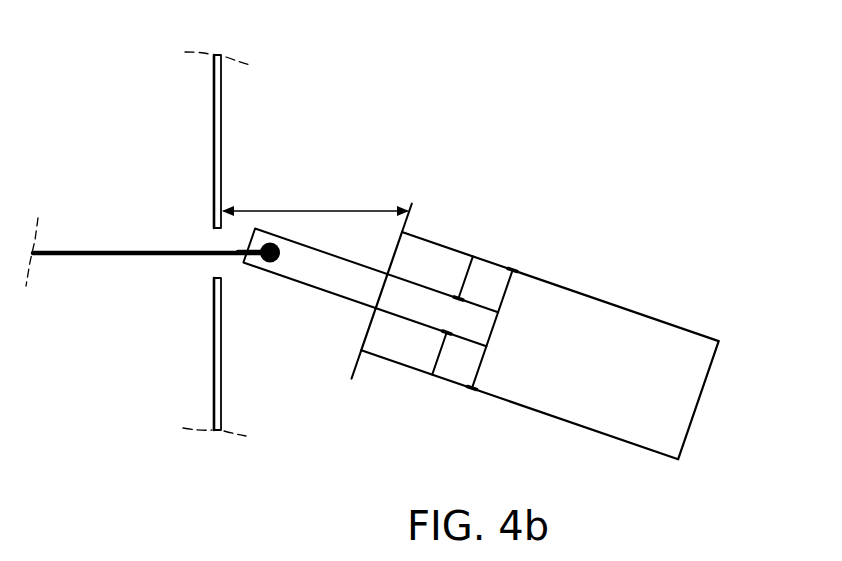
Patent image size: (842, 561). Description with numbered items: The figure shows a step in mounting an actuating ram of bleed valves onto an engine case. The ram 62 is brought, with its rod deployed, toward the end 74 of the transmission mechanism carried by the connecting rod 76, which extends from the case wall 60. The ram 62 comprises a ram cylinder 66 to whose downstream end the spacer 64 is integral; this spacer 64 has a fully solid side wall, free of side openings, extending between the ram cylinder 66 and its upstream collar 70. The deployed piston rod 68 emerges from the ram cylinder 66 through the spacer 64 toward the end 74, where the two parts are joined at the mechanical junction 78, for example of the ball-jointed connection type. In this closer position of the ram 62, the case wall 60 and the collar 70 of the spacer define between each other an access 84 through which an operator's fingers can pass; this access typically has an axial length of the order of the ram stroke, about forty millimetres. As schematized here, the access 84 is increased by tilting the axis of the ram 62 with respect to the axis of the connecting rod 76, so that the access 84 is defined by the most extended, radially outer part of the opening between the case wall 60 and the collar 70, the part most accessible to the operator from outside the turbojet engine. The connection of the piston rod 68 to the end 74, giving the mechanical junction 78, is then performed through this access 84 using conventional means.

The case wall 60 is at (222, 80).
The ram 62 is at (690, 320).
The spacer 64 is at (448, 246).
The ram cylinder 66 is at (607, 302).
The piston rod 68 is at (323, 276).
The upstream collar 70 is at (350, 380).
The end 74 is at (238, 248).
The connecting rod 76 is at (137, 258).
The mechanical junction 78 is at (270, 264).
The access 84 is at (313, 208).